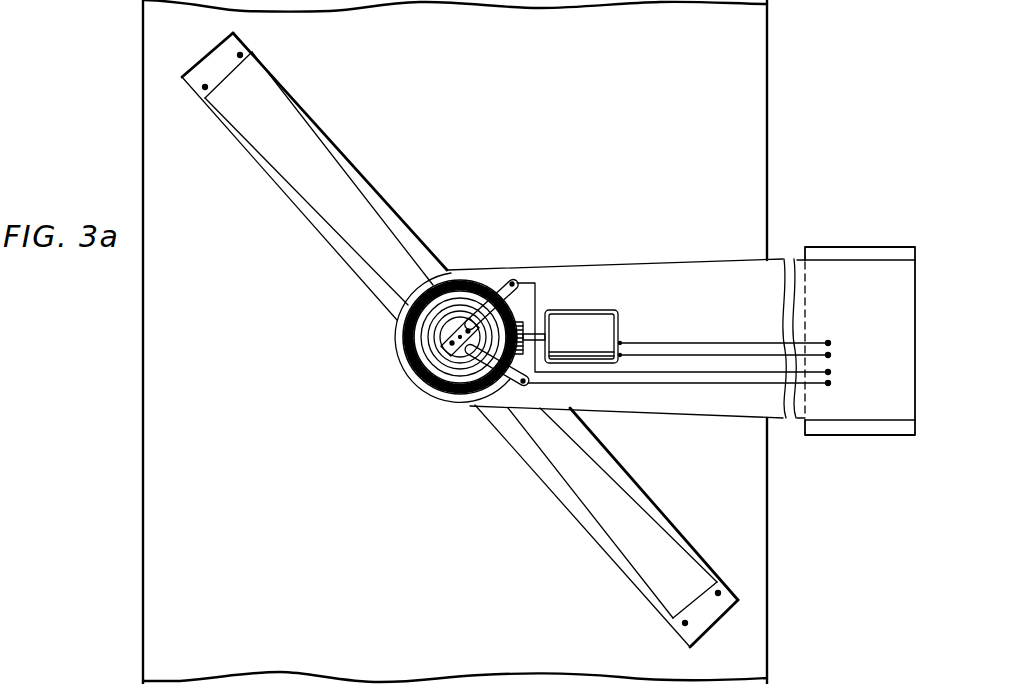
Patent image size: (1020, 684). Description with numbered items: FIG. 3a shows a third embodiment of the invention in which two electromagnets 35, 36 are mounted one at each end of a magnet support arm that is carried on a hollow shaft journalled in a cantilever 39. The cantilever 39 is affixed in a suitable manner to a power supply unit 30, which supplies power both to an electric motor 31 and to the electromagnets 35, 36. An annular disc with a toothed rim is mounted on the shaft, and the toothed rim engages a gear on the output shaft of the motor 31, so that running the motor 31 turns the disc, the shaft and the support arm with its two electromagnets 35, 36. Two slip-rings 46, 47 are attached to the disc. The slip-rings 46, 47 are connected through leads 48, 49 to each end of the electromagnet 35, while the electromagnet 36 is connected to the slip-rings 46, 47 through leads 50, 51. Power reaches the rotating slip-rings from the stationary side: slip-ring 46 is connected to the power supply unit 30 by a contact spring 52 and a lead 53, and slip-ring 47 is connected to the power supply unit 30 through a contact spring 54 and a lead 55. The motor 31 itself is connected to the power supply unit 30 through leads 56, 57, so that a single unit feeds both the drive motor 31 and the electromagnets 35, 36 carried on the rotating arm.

The power supply unit 30 is at (855, 435).
The electric motor 31 is at (575, 310).
The electromagnet 35 is at (208, 60).
The electromagnet 36 is at (713, 608).
The cantilever 39 is at (727, 302).
The slip-ring 46 is at (452, 298).
The slip-ring 47 is at (430, 347).
The lead 48 is at (338, 173).
The lead 49 is at (308, 197).
The lead 50 is at (692, 560).
The lead 51 is at (662, 607).
The contact spring 52 is at (502, 290).
The lead 53 is at (655, 373).
The contact spring 54 is at (517, 380).
The lead 55 is at (720, 387).
The lead 56 is at (635, 343).
The lead 57 is at (661, 355).